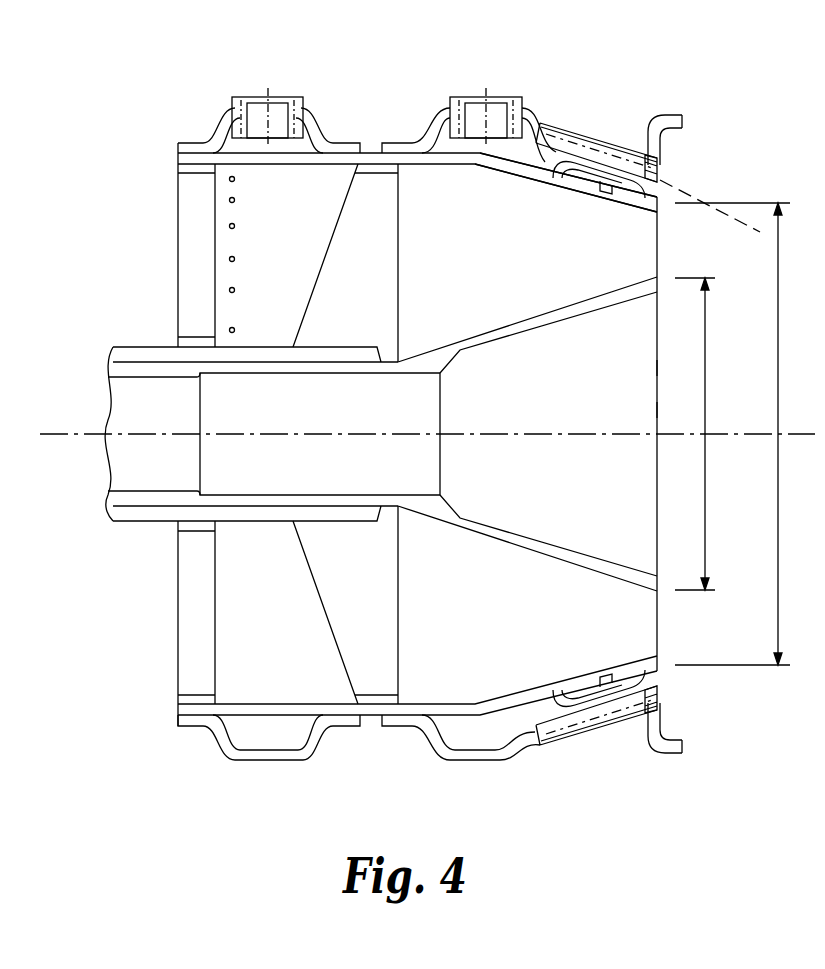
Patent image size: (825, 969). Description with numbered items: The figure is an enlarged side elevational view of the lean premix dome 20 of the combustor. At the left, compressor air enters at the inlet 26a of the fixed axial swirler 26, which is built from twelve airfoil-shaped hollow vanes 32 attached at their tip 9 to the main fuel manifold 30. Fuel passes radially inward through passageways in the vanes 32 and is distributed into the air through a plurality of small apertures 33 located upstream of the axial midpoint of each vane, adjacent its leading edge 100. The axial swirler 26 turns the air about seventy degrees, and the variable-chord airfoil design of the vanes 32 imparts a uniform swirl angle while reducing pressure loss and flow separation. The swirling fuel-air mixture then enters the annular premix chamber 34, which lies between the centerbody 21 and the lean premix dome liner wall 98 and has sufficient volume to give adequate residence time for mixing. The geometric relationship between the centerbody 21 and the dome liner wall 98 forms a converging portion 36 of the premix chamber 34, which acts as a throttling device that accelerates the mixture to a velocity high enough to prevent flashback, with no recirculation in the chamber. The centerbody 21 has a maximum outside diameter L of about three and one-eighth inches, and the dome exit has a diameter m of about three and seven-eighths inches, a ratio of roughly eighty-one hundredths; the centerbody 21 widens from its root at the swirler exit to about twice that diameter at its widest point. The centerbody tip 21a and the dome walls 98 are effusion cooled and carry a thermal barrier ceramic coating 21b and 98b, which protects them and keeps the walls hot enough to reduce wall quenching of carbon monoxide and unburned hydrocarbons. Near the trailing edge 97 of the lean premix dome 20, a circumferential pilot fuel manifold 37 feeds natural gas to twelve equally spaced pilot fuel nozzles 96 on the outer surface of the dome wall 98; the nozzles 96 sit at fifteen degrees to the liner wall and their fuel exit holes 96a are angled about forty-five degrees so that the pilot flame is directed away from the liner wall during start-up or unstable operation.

The lean premix dome 20 is at (450, 72).
The leading edge 100 is at (215, 177).
The axial swirler 26 is at (260, 235).
The inlet 26a is at (204, 256).
The apertures 33 is at (230, 329).
The tip 9 is at (313, 165).
The centerbody 21 is at (217, 470).
The centerbody tip 21a is at (658, 368).
The thermal barrier ceramic coating 21b is at (658, 410).
The vanes 32 is at (245, 170).
The main fuel manifold 30 is at (242, 730).
The pilot fuel manifold 37 is at (527, 132).
The converging portion 36 is at (575, 230).
The pilot fuel nozzles 96 is at (662, 152).
The fuel exit holes 96a is at (658, 180).
The trailing edge 97 is at (658, 233).
The lean premix dome liner wall 98 is at (457, 241).
The thermal barrier ceramic coating 98b is at (590, 282).
The premix chamber 34 is at (535, 640).
The maximum outside diameter of the centerbody L is at (706, 434).
The lean premix dome exit diameter m is at (745, 434).